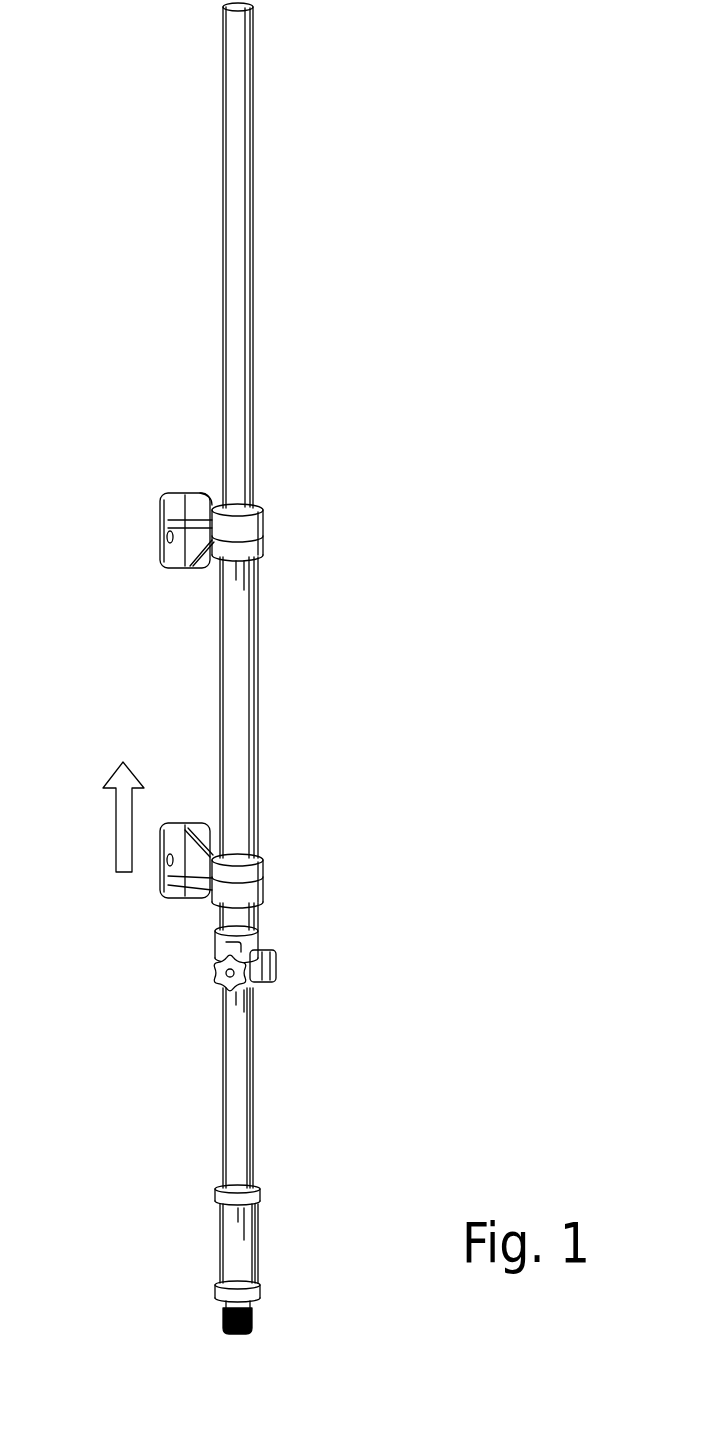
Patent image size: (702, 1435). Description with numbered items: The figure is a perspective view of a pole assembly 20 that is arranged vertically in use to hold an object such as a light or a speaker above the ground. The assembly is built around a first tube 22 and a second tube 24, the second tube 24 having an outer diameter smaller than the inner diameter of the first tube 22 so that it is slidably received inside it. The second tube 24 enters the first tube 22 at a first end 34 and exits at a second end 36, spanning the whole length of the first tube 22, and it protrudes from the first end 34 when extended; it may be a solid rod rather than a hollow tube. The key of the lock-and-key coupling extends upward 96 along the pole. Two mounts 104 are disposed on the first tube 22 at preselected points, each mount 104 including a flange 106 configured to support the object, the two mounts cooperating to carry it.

The pole assembly 20 is at (450, 145).
The first tube 22 is at (258, 731).
The second tube 24 is at (251, 297).
The first end 34 is at (318, 960).
The second end 36 is at (255, 500).
The upward direction 96 is at (116, 831).
The mount 104 is at (143, 498).
The flange 106 is at (165, 562).